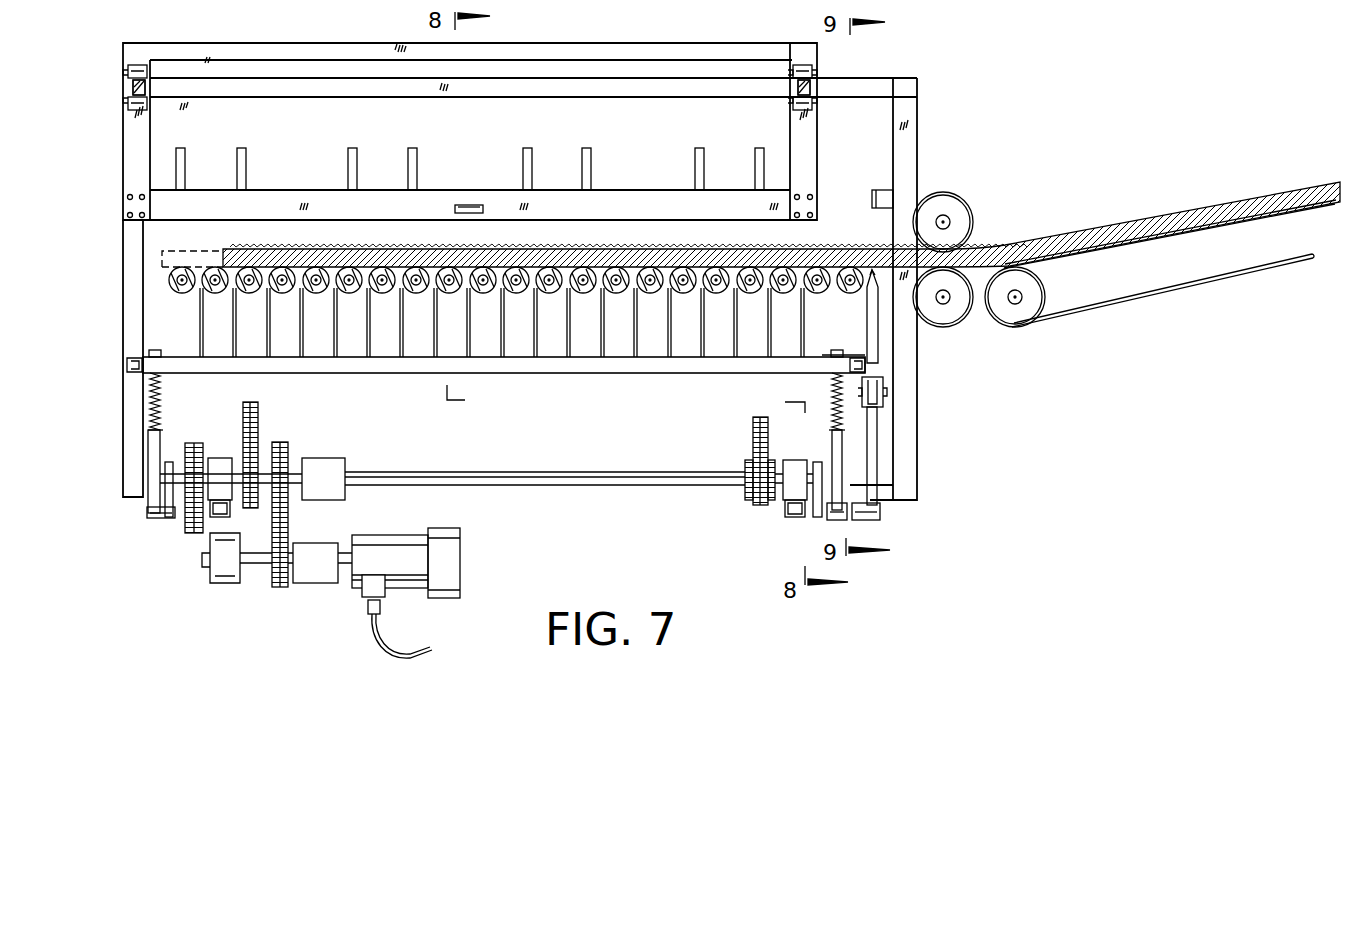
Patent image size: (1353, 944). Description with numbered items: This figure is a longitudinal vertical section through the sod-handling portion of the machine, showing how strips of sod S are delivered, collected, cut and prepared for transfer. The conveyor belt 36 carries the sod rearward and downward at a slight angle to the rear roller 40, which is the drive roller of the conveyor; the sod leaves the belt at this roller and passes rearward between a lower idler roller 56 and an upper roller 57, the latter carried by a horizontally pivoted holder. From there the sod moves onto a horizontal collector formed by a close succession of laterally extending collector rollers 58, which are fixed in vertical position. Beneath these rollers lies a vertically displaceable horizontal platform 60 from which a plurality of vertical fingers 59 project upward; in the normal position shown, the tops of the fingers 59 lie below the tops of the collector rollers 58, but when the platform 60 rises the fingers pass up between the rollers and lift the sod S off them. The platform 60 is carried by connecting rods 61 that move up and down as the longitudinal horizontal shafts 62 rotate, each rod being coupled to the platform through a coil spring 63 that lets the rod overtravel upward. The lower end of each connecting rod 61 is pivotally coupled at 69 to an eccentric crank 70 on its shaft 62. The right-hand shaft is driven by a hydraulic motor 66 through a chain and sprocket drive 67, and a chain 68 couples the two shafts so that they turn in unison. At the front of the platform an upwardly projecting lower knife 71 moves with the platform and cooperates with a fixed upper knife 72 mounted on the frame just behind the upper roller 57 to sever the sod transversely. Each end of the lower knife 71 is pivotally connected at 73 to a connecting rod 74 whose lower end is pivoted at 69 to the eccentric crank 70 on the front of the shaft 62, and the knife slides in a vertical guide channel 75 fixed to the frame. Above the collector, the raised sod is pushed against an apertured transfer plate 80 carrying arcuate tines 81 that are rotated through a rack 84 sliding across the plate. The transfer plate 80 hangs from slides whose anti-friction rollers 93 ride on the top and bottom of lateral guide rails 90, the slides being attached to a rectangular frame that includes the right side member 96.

The conveyor belt 36 is at (1150, 240).
The rear roller 40 is at (1047, 292).
The lower idler roller 56 is at (950, 325).
The upper roller 57 is at (943, 193).
The collector rollers 58 is at (180, 293).
The vertical fingers 59 is at (250, 310).
The horizontal platform 60 is at (612, 373).
The connecting rods 61 is at (150, 450).
The horizontal shafts 62 is at (612, 471).
The coil spring 63 is at (160, 397).
The hydraulic motor 66 is at (455, 556).
The chain and sprocket drive 67 is at (289, 528).
The chain 68 is at (194, 536).
The pivotal coupling 69 is at (147, 510).
The eccentric crank 70 is at (170, 520).
The lower knife 71 is at (878, 275).
The upper knife 72 is at (873, 208).
The pivotal connection 73 is at (887, 391).
The connecting rod 74 is at (877, 452).
The vertical guide channel 75 is at (867, 320).
The transfer plate 80 is at (612, 196).
The arcuate tines 81 is at (237, 163).
The rack 84 is at (483, 208).
The guide rails 90 is at (146, 88).
The anti-friction rollers 93 is at (133, 70).
The right side member 96 is at (645, 48).
The sod S is at (280, 253).